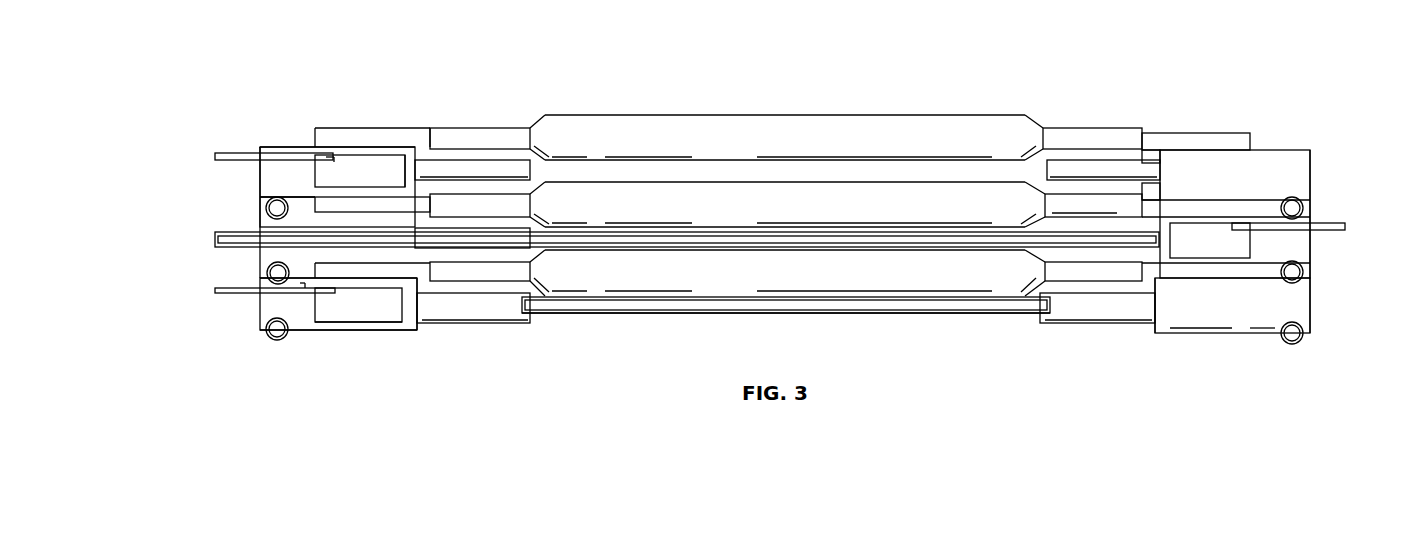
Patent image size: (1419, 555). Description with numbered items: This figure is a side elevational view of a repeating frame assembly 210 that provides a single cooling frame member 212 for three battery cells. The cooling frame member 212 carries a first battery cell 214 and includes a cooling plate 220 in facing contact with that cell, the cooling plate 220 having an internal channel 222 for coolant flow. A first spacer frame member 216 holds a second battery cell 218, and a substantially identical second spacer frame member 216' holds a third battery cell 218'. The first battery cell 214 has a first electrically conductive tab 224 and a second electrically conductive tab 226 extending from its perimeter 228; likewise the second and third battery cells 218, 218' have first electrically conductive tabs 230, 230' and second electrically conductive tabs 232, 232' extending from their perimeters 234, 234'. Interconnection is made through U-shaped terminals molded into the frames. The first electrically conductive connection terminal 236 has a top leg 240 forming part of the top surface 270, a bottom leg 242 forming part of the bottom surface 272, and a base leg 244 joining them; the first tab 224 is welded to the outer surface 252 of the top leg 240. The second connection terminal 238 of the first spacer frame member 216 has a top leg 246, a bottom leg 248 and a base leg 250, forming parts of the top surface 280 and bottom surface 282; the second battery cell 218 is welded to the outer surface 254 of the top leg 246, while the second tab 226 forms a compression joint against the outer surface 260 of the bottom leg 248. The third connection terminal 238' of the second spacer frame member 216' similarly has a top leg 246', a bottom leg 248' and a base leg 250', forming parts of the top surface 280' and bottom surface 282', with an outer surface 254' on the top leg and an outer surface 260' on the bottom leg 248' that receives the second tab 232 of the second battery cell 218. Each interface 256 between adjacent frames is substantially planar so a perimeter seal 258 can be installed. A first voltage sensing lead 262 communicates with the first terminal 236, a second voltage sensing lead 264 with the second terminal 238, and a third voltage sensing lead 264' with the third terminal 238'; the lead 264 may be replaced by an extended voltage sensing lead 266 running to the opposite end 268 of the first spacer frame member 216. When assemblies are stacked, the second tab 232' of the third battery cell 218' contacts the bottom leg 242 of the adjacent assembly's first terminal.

The repeating frame assembly 210 is at (288, 87).
The top surface of the second spacer frame member 280' is at (293, 107).
The second spacer frame member 216' is at (296, 174).
The third voltage sensing lead 264' is at (243, 160).
The bottom surface of the second spacer frame member 282' is at (240, 193).
The opposite end of the first spacer frame member 268 is at (262, 208).
The first spacer frame member 216 is at (187, 228).
The extended voltage sensing lead 266 is at (216, 238).
The outer surface of the top leg of the first connection terminal 252 is at (300, 270).
The first voltage sensing lead 262 is at (217, 289).
The cooling frame member 212 is at (258, 324).
The top surface of the cooling frame member 270 is at (272, 335).
The bottom surface of the cooling frame member 272 is at (303, 332).
The first electrically conductive connection terminal 236 is at (322, 336).
The bottom leg of the first connection terminal 242 is at (343, 323).
The first electrically conductive tab of the first battery cell 224 is at (365, 278).
The base leg of the first connection terminal 244 is at (412, 310).
The perimeter of the first battery cell 228 is at (428, 293).
The internal channel 222 is at (570, 312).
The cooling plate 220 is at (950, 322).
The top leg of the first connection terminal 240 is at (306, 284).
The second electrically conductive tab of the second battery cell 232 is at (287, 185).
The outer surface of the top leg of the third connection terminal 254' is at (328, 173).
The bottom leg of the third connection terminal 248' is at (360, 179).
The outer surface of the bottom leg of the third connection terminal 260' is at (372, 215).
The first electrically conductive tab of the third battery cell 230' is at (350, 126).
The top leg of the third connection terminal 246' is at (432, 142).
The third electrically conductive connection terminal 238' is at (456, 168).
The base leg of the third connection terminal 250' is at (441, 140).
The third battery cell 218' is at (786, 137).
The second battery cell 218 is at (786, 204).
The first battery cell 214 is at (746, 281).
The perimeter of the third battery cell 234' is at (1140, 124).
The second electrically conductive tab of the third battery cell 232' is at (1196, 121).
The top surface of the first spacer frame member 280 is at (1259, 213).
The perimeter of the second battery cell 234 is at (1130, 174).
The outer surface of the top leg of the second connection terminal 254 is at (1226, 190).
The perimeter seal 258 is at (1301, 202).
The interface 256 is at (1310, 213).
The second voltage sensing lead 264 is at (1305, 239).
The first electrically conductive tab of the second battery cell 230 is at (1210, 231).
The top leg of the second connection terminal 246 is at (1226, 234).
The bottom surface of the first spacer frame member 282 is at (1332, 272).
The bottom leg of the second connection terminal 248 is at (1250, 289).
The base leg of the second connection terminal 250 is at (1103, 290).
The second electrically conductive tab of the first battery cell 226 is at (1197, 275).
The outer surface of the bottom leg of the second connection terminal 260 is at (1139, 318).
The second electrically conductive connection terminal 238 is at (1262, 325).